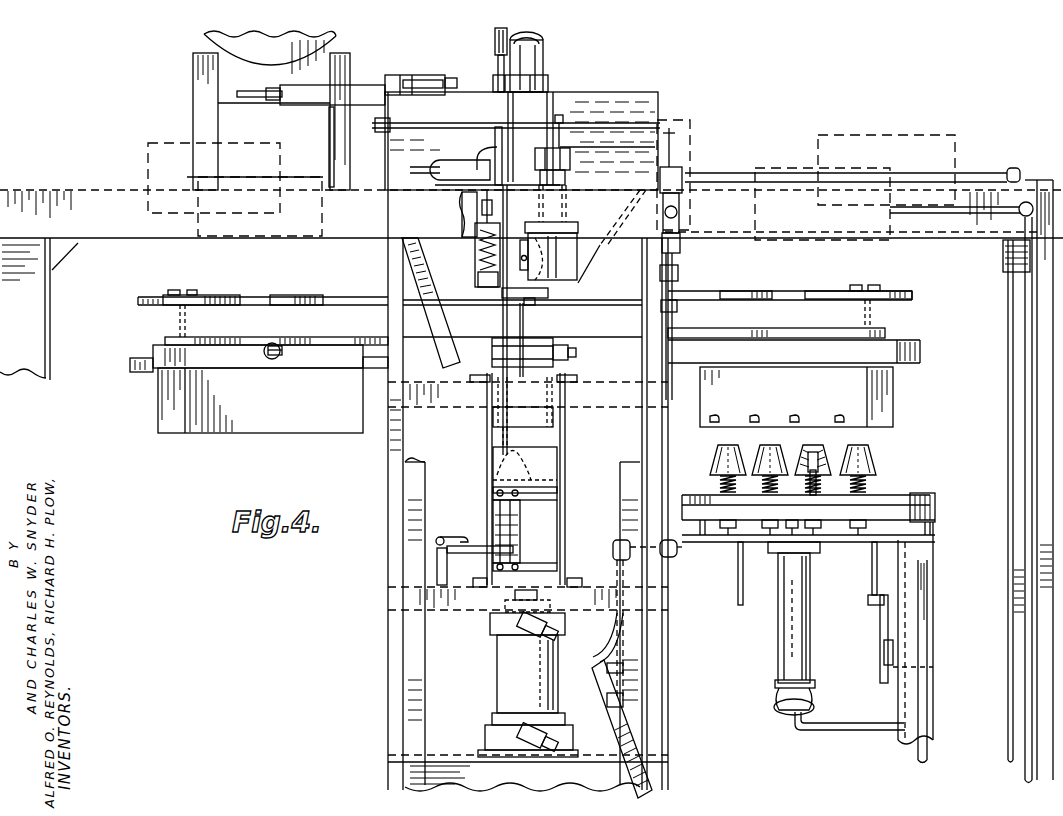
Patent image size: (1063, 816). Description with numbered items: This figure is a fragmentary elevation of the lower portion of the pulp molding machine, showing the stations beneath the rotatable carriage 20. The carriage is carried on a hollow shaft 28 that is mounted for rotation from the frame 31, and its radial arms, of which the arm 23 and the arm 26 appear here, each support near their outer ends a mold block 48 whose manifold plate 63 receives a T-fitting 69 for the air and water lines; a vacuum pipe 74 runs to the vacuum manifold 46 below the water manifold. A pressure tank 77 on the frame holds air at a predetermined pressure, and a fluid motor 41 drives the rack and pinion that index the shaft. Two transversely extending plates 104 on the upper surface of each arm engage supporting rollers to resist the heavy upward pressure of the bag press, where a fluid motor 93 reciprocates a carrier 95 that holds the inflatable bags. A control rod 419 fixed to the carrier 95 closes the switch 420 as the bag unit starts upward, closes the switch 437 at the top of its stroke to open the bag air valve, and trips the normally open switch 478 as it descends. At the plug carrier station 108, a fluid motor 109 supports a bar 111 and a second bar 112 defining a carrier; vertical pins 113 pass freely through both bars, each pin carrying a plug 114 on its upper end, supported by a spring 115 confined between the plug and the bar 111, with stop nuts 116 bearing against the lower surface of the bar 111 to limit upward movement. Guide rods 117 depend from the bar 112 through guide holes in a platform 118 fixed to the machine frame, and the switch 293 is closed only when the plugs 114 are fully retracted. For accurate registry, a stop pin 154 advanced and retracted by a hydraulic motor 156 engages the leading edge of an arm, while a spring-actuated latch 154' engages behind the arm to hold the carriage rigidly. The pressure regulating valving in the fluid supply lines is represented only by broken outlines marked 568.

The rotatable carriage 20 is at (900, 280).
The arm 23 is at (795, 290).
The arm 26 is at (350, 297).
The shaft 28 is at (545, 53).
The frame 31 is at (1000, 220).
The fluid motor 41 is at (318, 106).
The vacuum manifold 46 is at (492, 352).
The mold block 48 is at (204, 444).
The manifold plate 63 is at (845, 355).
The T-fitting 69 is at (272, 343).
The vacuum pipe 74 is at (576, 352).
The pressure tank 77 is at (330, 42).
The fluid motor 93 is at (505, 683).
The carrier 95 is at (558, 494).
The plates 104 is at (213, 294).
The plug carrier station 108 is at (932, 486).
The fluid motor 109 is at (790, 632).
The bar 111 is at (888, 498).
The second bar 112 is at (936, 518).
The vertical pins 113 is at (793, 519).
The plug 114 is at (848, 470).
The spring 115 is at (824, 482).
The stop nuts 116 is at (759, 508).
The guide rods 117 is at (737, 576).
The platform 118 is at (936, 540).
The stop pin 154 is at (565, 245).
The spring-actuated latch 154' is at (470, 245).
The hydraulic motor 156 is at (560, 181).
The switch 293 is at (880, 653).
The control rod 419 is at (520, 524).
The switch 420 is at (430, 167).
The switch 437 is at (494, 36).
The switch 478 is at (447, 532).
The regulatory grouping 568 is at (160, 142).